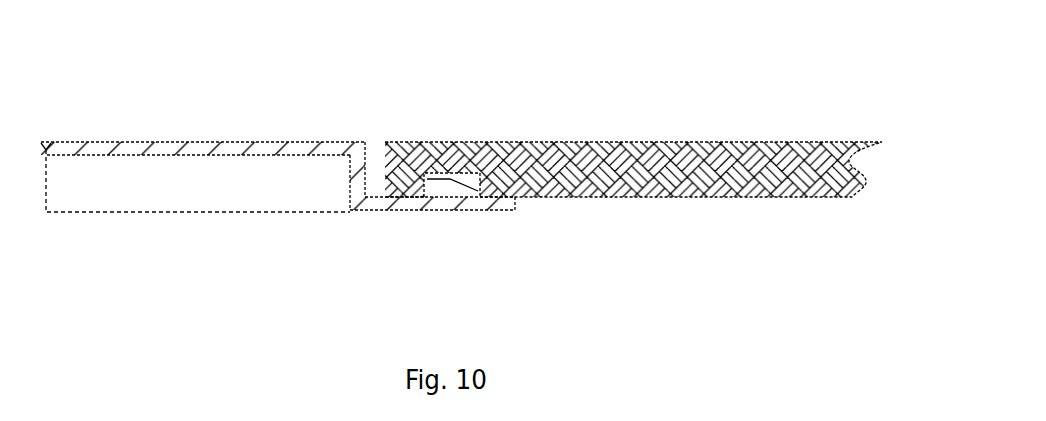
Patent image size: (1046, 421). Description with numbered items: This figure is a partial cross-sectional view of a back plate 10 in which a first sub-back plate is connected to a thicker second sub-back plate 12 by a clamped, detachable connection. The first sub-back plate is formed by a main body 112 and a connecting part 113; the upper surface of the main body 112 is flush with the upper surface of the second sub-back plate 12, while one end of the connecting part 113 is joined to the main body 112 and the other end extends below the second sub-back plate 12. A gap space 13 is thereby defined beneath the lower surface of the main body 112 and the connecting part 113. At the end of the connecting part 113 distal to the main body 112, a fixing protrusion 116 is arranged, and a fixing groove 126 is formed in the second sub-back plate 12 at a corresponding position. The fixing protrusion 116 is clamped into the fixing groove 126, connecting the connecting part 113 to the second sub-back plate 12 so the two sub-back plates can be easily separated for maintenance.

The back plate 10 is at (733, 94).
The second sub-back plate 12 is at (653, 172).
The gap space 13 is at (217, 197).
The main body 112 is at (204, 150).
The connecting part 113 is at (357, 210).
The fixing protrusion 116 is at (450, 180).
The fixing groove 126 is at (472, 170).